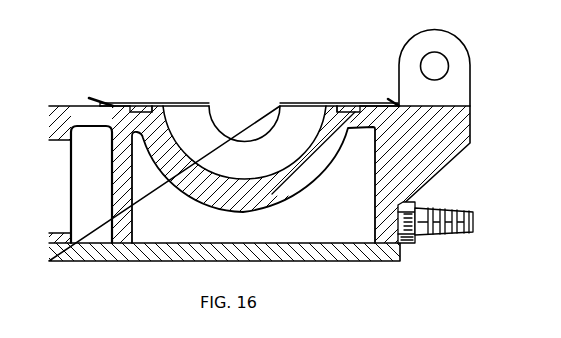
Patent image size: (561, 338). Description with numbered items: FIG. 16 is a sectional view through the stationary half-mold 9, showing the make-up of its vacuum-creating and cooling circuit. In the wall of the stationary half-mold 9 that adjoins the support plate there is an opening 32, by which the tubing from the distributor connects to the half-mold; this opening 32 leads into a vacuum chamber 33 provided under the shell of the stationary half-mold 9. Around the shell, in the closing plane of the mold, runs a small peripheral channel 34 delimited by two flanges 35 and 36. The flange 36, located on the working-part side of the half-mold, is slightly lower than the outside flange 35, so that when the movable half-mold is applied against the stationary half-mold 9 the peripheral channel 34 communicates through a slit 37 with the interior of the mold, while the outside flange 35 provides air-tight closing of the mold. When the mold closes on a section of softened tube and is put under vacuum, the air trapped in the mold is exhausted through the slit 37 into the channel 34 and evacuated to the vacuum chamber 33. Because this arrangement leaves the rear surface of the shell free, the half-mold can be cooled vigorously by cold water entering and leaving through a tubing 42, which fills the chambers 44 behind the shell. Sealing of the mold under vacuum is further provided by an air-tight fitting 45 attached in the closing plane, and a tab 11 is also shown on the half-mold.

The stationary half-mold 9 is at (463, 132).
The mounting tab 11 is at (458, 53).
The opening 32 is at (59, 168).
The vacuum chamber 33 is at (102, 235).
The peripheral channel 34 is at (140, 105).
The outside flange 35 is at (122, 104).
The flange 36 is at (143, 106).
The slit 37 is at (153, 104).
The tubing 42 is at (473, 221).
The chamber 44 is at (331, 231).
The air-tight fitting 45 is at (97, 99).